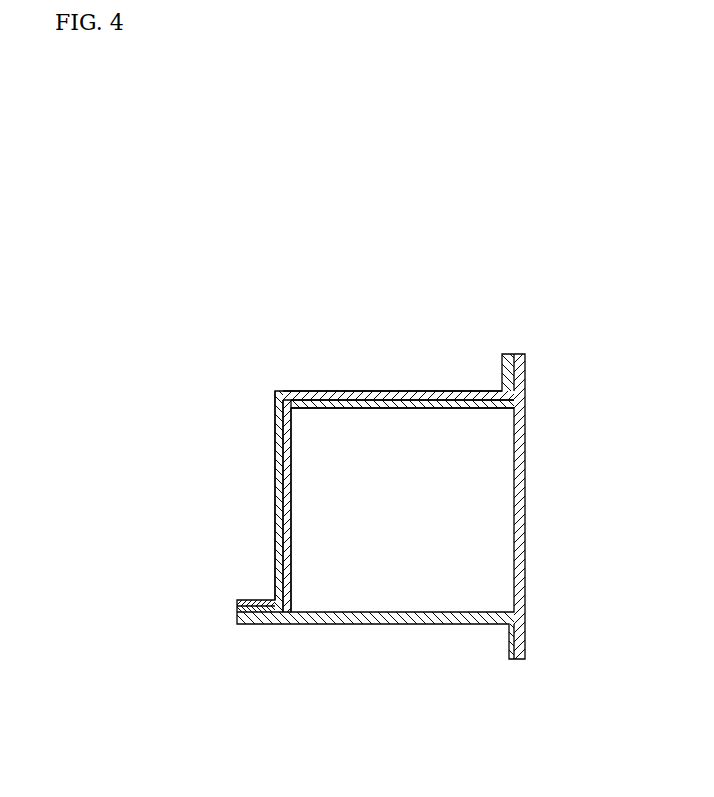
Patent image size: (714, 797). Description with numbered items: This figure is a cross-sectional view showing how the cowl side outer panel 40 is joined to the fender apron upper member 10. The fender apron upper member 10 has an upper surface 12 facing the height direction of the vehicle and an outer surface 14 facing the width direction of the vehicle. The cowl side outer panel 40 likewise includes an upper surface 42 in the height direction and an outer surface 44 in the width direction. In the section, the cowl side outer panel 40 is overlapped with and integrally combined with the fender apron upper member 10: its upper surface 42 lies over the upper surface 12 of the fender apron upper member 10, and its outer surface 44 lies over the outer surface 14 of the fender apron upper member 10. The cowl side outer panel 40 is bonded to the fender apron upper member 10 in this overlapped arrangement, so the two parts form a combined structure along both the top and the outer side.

The fender apron upper member 10 is at (395, 653).
The upper surface 12 is at (410, 410).
The outer surface 14 is at (292, 527).
The cowl side outer panel 40 is at (366, 437).
The upper surface 42 is at (302, 391).
The outer surface 44 is at (275, 456).